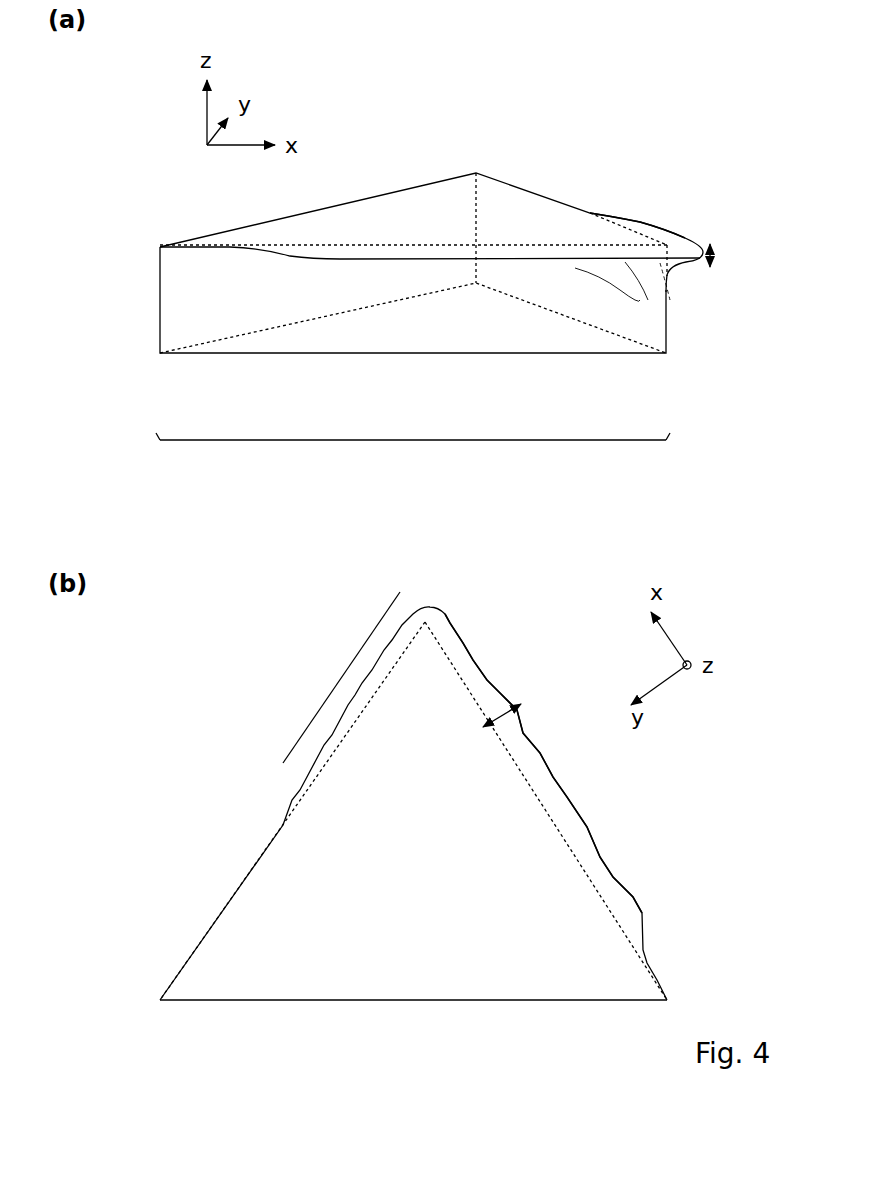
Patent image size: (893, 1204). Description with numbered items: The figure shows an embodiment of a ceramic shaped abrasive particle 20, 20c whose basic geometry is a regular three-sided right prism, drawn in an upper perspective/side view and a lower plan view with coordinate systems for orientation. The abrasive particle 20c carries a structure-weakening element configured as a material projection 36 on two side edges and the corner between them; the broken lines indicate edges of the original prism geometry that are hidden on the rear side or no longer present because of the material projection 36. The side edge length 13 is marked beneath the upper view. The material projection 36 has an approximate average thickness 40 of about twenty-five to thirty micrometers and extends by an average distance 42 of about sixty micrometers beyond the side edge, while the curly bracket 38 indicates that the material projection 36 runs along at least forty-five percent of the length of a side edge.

The ceramic shaped abrasive particle 20 is at (638, 102).
The ceramic shaped abrasive particle 20c is at (245, 697).
The material projection 36 is at (683, 232).
The thickness 40 is at (730, 259).
The length 13 is at (413, 441).
The curly bracket 38 is at (339, 676).
The distance 42 is at (502, 708).